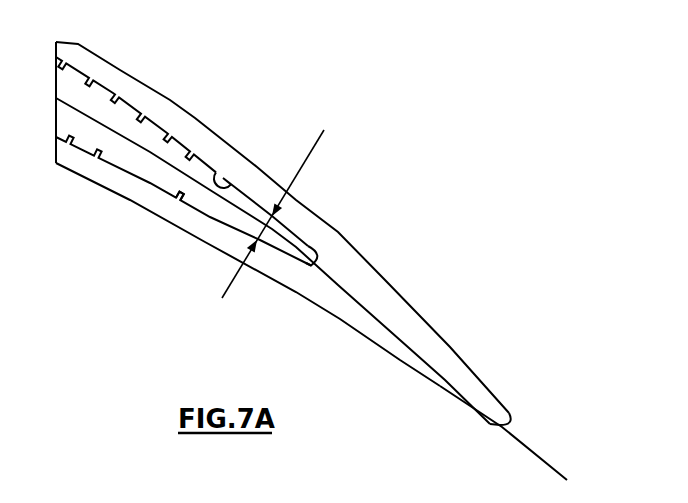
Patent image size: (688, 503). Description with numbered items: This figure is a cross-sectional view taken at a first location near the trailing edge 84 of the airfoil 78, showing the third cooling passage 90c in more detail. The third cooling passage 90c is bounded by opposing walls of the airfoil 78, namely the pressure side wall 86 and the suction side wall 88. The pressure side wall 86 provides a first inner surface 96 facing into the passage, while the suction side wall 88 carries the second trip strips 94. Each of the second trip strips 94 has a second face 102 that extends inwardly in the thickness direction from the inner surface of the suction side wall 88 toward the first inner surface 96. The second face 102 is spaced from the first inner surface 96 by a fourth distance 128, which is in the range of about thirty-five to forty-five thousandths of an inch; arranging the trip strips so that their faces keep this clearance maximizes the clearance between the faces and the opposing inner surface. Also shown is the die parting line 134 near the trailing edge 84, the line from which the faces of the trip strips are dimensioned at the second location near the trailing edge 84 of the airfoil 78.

The airfoil 78 is at (482, 229).
The trailing edge 84 is at (510, 420).
The pressure side wall 86 is at (113, 183).
The suction side wall 88 is at (137, 90).
The third cooling passage 90c is at (306, 229).
The second trip strips 94 is at (148, 117).
The first inner surface 96 is at (170, 191).
The second face 102 is at (233, 181).
The fourth distance 128 is at (325, 139).
The die parting line 134 is at (553, 466).